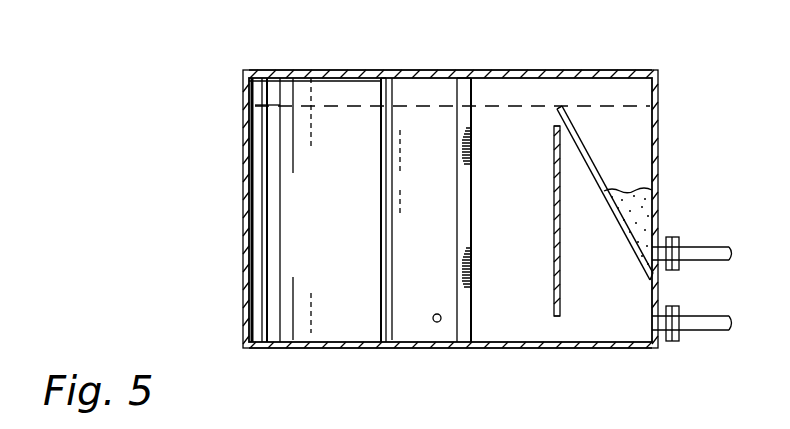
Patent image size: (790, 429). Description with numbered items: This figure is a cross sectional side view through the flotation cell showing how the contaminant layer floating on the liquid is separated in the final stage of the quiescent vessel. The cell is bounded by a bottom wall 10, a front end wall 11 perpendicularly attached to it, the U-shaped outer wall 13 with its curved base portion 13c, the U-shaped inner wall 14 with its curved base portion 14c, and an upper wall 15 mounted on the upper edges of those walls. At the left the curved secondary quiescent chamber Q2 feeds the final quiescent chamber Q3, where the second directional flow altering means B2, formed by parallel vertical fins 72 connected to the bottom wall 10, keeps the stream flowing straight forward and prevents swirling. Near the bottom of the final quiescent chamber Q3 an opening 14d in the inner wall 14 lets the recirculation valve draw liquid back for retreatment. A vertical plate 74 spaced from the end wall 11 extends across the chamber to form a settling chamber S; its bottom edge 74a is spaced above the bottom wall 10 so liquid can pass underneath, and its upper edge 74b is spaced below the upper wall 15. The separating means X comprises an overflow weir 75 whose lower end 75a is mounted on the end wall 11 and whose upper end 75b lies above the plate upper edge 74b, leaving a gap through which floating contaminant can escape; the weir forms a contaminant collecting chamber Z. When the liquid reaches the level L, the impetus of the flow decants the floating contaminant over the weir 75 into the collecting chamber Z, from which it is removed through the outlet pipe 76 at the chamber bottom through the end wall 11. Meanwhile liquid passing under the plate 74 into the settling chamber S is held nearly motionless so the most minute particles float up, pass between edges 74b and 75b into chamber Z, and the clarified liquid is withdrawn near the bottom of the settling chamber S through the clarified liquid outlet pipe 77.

The bottom wall 10 is at (358, 348).
The front end wall 11 is at (660, 97).
The U-shaped outer wall 13 is at (248, 147).
The curved base portion 13c is at (248, 126).
The U-shaped inner wall 14 is at (381, 168).
The curved base portion 14c is at (381, 138).
The opening 14d is at (436, 314).
The upper wall 15 is at (356, 70).
The vertical fins 72 is at (458, 175).
The vertical plate 74 is at (553, 218).
The bottom edge 74a is at (553, 316).
The upper edge 74b is at (553, 128).
The overflow weir 75 is at (578, 136).
The lower end 75a is at (650, 280).
The upper end 75b is at (556, 107).
The outlet pipe 76 is at (665, 240).
The clarified liquid outlet pipe 77 is at (662, 316).
The second directional flow altering means B2 is at (453, 90).
The liquid level L is at (500, 106).
The separating means X is at (577, 118).
The contaminant collecting chamber Z is at (632, 163).
The settling chamber S is at (603, 266).
The curved secondary quiescent chamber Q2 is at (330, 227).
The final quiescent chamber Q3 is at (523, 188).